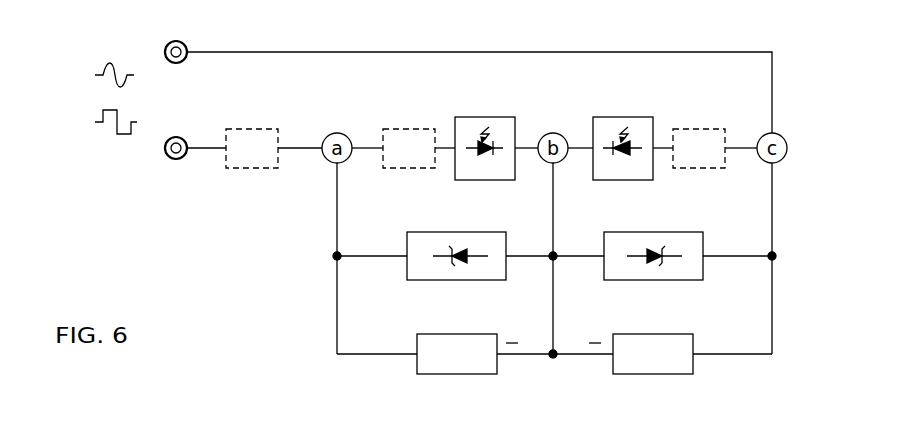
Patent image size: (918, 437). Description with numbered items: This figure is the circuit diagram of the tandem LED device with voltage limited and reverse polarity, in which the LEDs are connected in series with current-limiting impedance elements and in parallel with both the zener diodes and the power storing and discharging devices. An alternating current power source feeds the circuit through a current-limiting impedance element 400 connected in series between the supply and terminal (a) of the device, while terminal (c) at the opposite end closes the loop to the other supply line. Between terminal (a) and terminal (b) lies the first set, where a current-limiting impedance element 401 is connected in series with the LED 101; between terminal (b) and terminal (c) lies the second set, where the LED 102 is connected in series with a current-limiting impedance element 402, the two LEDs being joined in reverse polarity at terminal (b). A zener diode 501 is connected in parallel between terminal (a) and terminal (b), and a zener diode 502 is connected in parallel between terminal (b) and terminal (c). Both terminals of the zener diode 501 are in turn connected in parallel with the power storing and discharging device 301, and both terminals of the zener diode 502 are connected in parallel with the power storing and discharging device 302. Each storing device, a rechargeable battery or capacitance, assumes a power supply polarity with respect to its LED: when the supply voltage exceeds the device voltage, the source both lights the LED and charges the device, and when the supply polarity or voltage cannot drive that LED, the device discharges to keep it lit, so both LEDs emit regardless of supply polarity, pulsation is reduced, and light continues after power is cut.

The current-limiting impedance element 400 is at (243, 129).
The current-limiting impedance element 401 is at (397, 129).
The current-limiting impedance element 402 is at (692, 129).
The LED 101 is at (477, 117).
The LED 102 is at (607, 117).
The zener diode 501 is at (437, 232).
The zener diode 502 is at (635, 232).
The power storing and discharging device 301 is at (437, 334).
The power storing and discharging device 302 is at (635, 334).